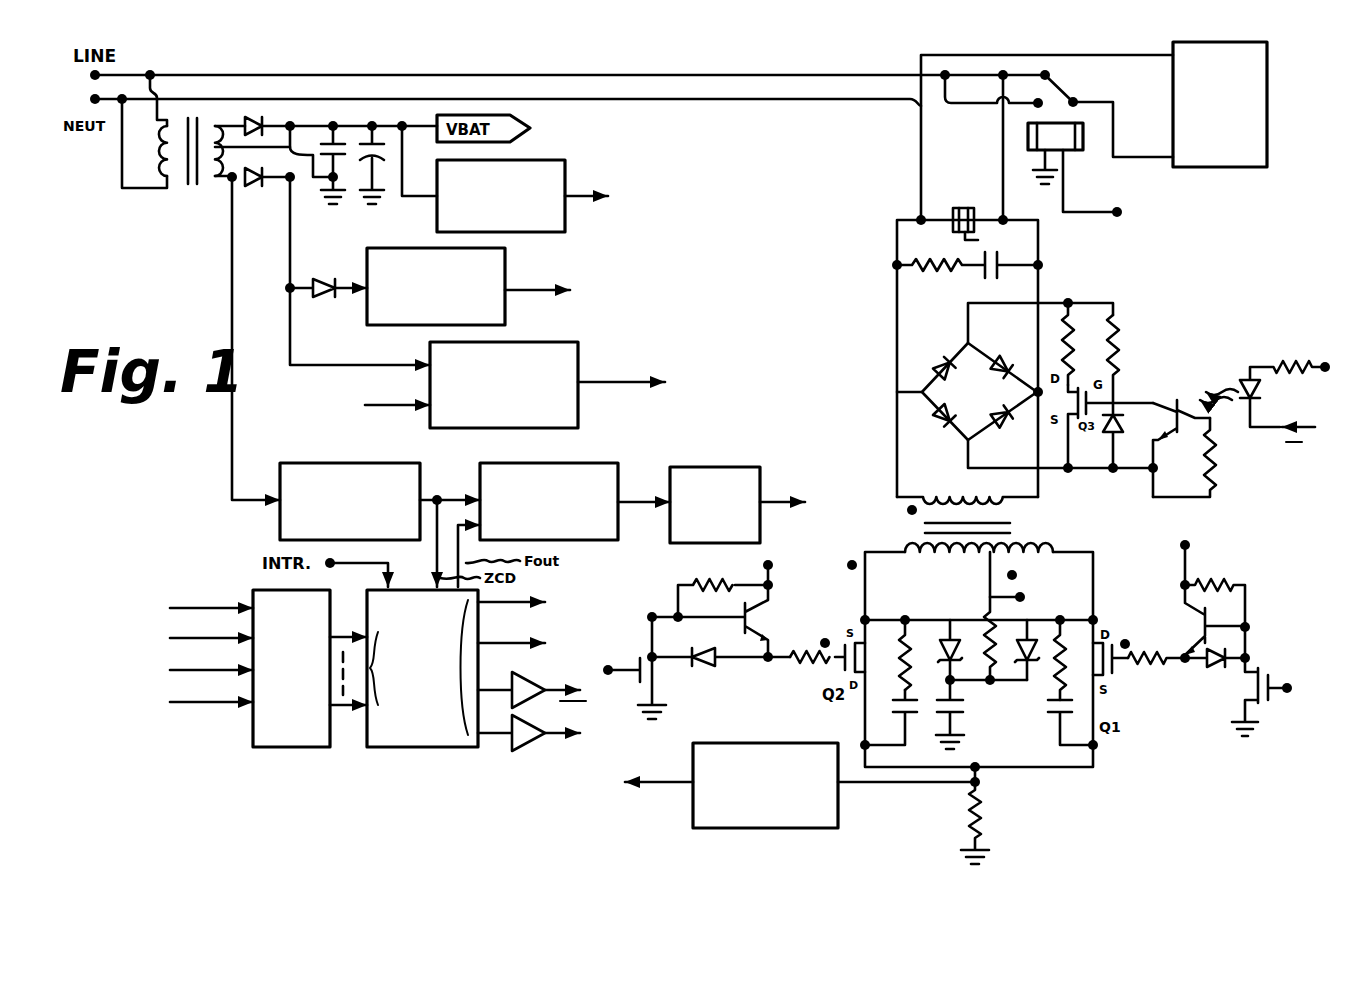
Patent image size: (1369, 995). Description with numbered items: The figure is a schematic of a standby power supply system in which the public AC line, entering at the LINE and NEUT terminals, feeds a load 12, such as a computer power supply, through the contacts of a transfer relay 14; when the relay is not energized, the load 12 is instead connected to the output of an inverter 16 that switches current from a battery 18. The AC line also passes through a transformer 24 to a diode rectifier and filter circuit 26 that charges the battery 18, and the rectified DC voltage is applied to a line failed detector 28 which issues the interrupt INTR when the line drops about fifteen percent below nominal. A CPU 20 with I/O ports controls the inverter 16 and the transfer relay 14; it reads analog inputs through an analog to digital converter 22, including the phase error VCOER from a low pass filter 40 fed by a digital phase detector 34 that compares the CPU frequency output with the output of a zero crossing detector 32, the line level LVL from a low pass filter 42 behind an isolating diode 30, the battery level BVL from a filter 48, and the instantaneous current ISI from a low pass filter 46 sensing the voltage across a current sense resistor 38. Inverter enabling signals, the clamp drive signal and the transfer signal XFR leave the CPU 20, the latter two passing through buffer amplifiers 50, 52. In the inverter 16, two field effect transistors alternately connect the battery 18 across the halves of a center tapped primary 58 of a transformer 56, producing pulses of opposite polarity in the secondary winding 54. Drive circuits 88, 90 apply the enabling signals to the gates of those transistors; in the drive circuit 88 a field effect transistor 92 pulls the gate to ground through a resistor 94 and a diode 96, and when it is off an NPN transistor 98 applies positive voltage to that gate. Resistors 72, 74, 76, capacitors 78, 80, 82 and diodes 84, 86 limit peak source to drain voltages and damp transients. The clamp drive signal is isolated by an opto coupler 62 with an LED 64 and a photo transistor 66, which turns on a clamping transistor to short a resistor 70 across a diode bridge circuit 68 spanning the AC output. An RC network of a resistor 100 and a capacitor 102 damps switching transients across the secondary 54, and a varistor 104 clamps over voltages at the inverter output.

The load 12 is at (1205, 168).
The transfer relay 14 is at (1083, 146).
The inverter 16 is at (979, 641).
The battery 18 is at (356, 186).
The CPU 20 is at (412, 750).
The analog to digital converter 22 is at (312, 748).
The transformer 24 is at (186, 180).
The diode rectifier and filter circuit 26 is at (280, 113).
The line failed detector 28 is at (543, 343).
The isolating diode 30 is at (325, 300).
The zero crossing detector 32 is at (355, 463).
The digital phase detector 34 is at (612, 463).
The current sense resistor 38 is at (982, 800).
The low pass filter 40 is at (735, 467).
The low pass filter 42 is at (402, 326).
The low pass filter 46 is at (840, 805).
The low pass filter Td 48 is at (568, 164).
The buffer amplifier 50 is at (525, 751).
The buffer driver 52 is at (515, 722).
The secondary winding 54 is at (957, 496).
The transformer 56 is at (905, 526).
The center tapped primary 58 is at (1060, 548).
The opto coupler 62 is at (1188, 343).
The LED 64 is at (1240, 380).
The photo transistor 66 is at (1184, 457).
The diode bridge circuit 68 is at (1027, 385).
The resistor 70 is at (1073, 318).
The resistor 72 is at (985, 615).
The resistor 74 is at (897, 650).
The resistor 76 is at (1052, 672).
The capacitor 78 is at (901, 705).
The capacitor 80 is at (1052, 700).
The capacitor 82 is at (958, 700).
The diode 84 is at (943, 628).
The diode 86 is at (1022, 640).
The drive circuit 88 is at (1227, 698).
The drive circuit 90 is at (716, 633).
The field effect transistor 92 is at (1264, 664).
The resistor 94 is at (1148, 668).
The diode 96 is at (1216, 680).
The NPN transistor 98 is at (1194, 624).
The resistor 100 is at (916, 258).
The capacitor 102 is at (973, 277).
The varistor 104 is at (969, 205).